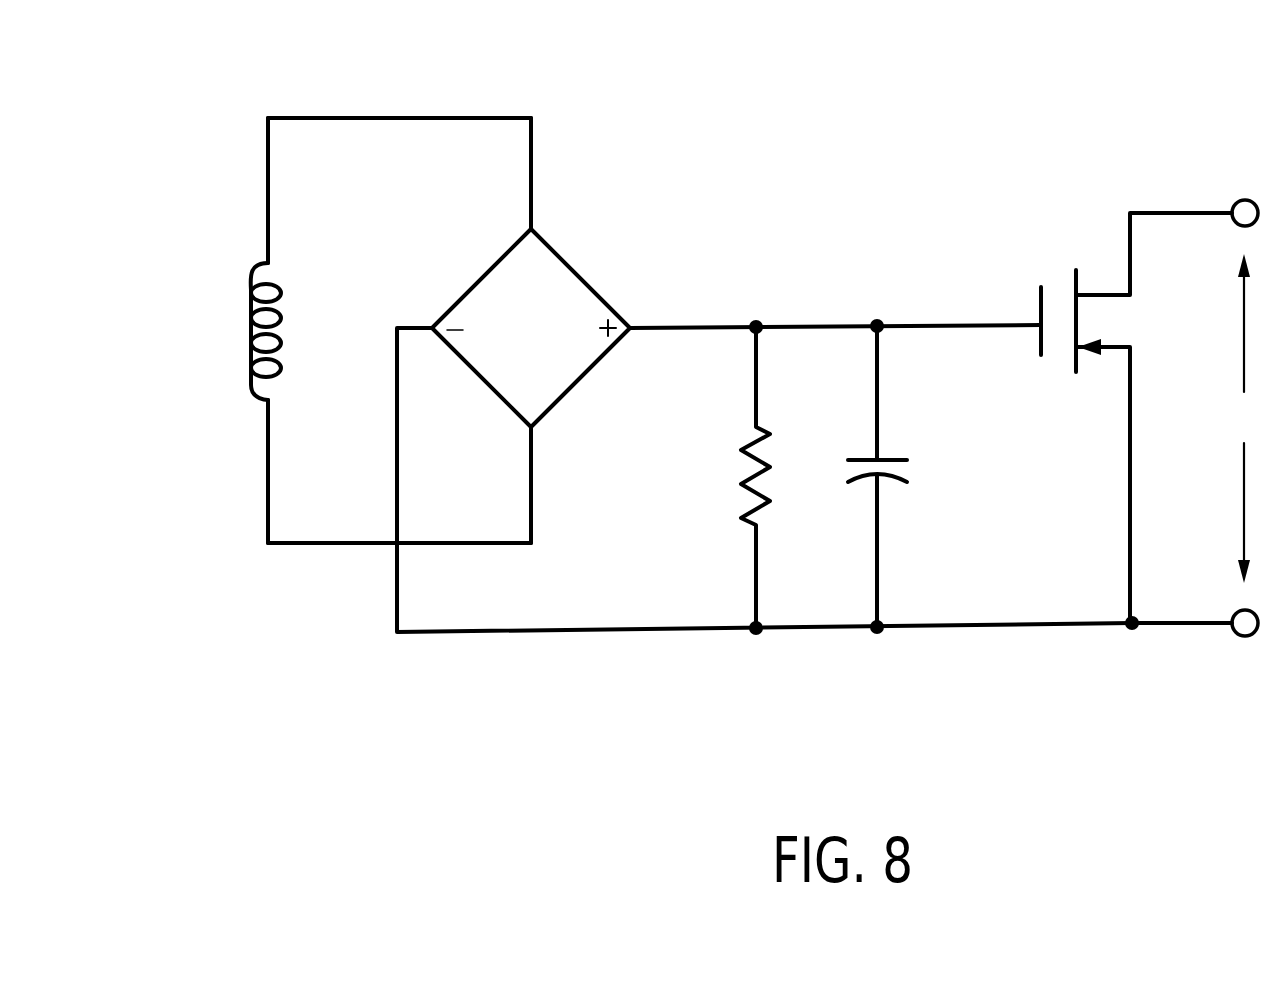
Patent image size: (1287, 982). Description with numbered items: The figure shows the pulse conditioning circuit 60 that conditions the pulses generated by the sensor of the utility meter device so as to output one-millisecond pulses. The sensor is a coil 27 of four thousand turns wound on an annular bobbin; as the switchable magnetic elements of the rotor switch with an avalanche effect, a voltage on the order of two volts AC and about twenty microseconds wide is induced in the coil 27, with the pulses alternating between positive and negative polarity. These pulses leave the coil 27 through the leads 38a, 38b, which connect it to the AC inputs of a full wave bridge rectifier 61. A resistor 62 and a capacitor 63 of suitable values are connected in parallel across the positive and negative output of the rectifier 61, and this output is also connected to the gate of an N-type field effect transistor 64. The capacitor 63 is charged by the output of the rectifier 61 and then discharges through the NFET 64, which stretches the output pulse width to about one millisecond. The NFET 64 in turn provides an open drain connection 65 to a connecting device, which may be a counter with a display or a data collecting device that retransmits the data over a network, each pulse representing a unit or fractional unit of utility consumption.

The coil 27 is at (250, 328).
The lead 38a is at (402, 117).
The lead 38b is at (327, 543).
The pulse conditioning circuit 60 is at (775, 150).
The full wave bridge rectifier 61 is at (582, 275).
The resistor 62 is at (750, 465).
The capacitor 63 is at (863, 478).
The N-type FET 64 is at (1038, 297).
The open drain connection 65 is at (1242, 418).